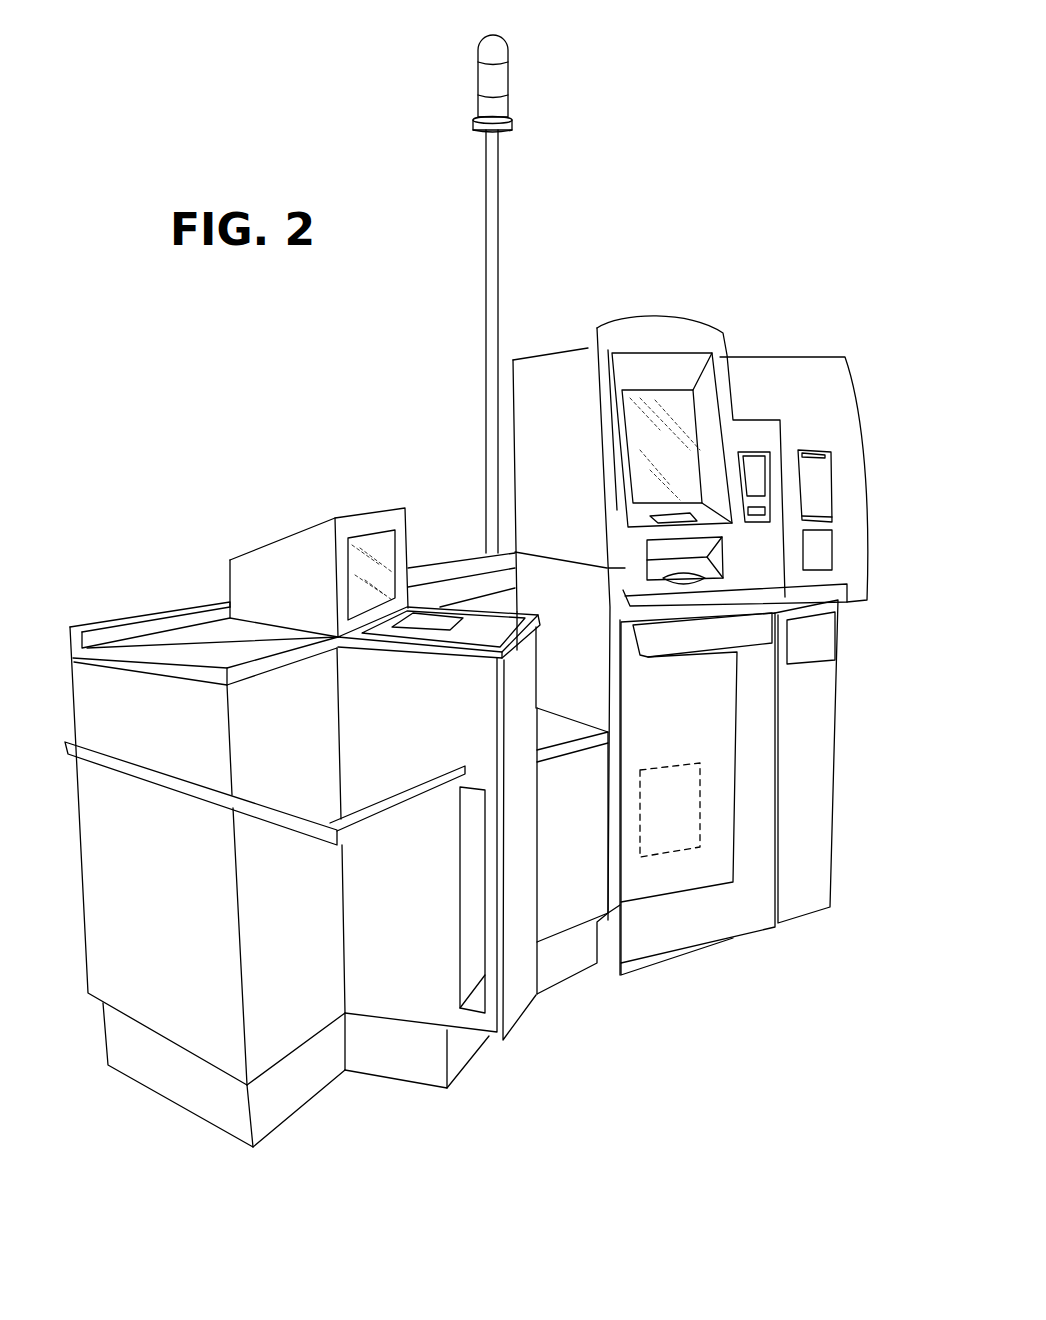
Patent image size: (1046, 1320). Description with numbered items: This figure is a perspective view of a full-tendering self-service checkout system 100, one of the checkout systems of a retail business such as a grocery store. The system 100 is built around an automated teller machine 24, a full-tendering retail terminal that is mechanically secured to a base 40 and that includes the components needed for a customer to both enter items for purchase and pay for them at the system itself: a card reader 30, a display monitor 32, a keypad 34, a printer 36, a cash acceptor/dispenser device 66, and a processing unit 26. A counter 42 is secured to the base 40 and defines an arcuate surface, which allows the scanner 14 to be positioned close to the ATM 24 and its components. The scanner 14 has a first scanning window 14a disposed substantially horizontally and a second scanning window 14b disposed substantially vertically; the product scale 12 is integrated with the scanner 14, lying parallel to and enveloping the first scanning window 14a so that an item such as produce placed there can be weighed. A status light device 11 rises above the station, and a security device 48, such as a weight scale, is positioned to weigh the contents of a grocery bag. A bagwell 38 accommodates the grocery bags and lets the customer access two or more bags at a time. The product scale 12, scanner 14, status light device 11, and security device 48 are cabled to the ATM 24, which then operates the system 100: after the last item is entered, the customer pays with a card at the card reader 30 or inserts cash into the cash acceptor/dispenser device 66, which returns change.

The full-tendering self-service checkout system 100 is at (746, 162).
The status light device 11 is at (512, 76).
The automated teller machine (ATM) 24 is at (822, 380).
The display monitor 32 is at (640, 446).
The keypad 34 is at (650, 519).
The card reader 30 is at (770, 467).
The printer 36 is at (812, 458).
The cash acceptor/dispenser device 66 is at (822, 547).
The processing unit 26 is at (673, 782).
The bagwell 38 is at (583, 676).
The security device 48 is at (567, 748).
The counter 42 is at (455, 590).
The base 40 is at (162, 1010).
The product scale 12 is at (468, 660).
The first scanning window 14a is at (422, 622).
The scanner 14 is at (319, 547).
The second scanning window 14b is at (355, 597).